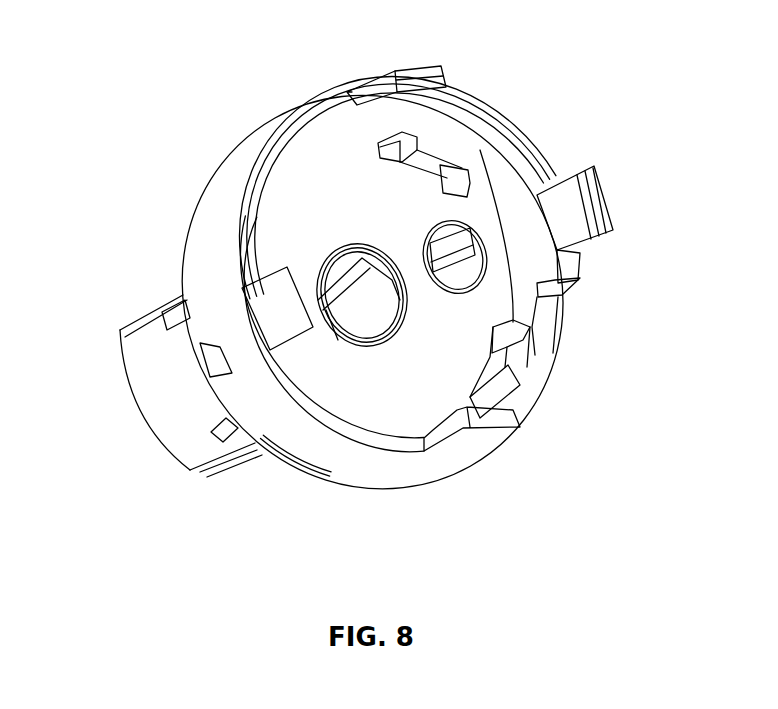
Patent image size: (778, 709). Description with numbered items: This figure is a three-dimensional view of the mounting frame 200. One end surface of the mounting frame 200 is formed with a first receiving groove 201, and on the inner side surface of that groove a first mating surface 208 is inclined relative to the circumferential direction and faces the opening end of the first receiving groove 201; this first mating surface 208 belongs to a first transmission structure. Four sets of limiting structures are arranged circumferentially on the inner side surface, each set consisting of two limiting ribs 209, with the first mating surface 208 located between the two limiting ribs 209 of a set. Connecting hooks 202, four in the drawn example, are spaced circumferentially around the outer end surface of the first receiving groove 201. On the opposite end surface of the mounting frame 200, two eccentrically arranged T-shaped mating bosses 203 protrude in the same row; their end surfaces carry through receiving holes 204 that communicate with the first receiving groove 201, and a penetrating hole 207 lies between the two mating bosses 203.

The mounting frame 200 is at (260, 152).
The first receiving groove 201 is at (300, 232).
The connecting hook 202 is at (372, 83).
The mating boss 203 is at (175, 395).
The receiving hole 204 is at (443, 253).
The penetrating hole 207 is at (362, 317).
The first mating surface 208 is at (502, 367).
The limiting rib 209 is at (465, 172).